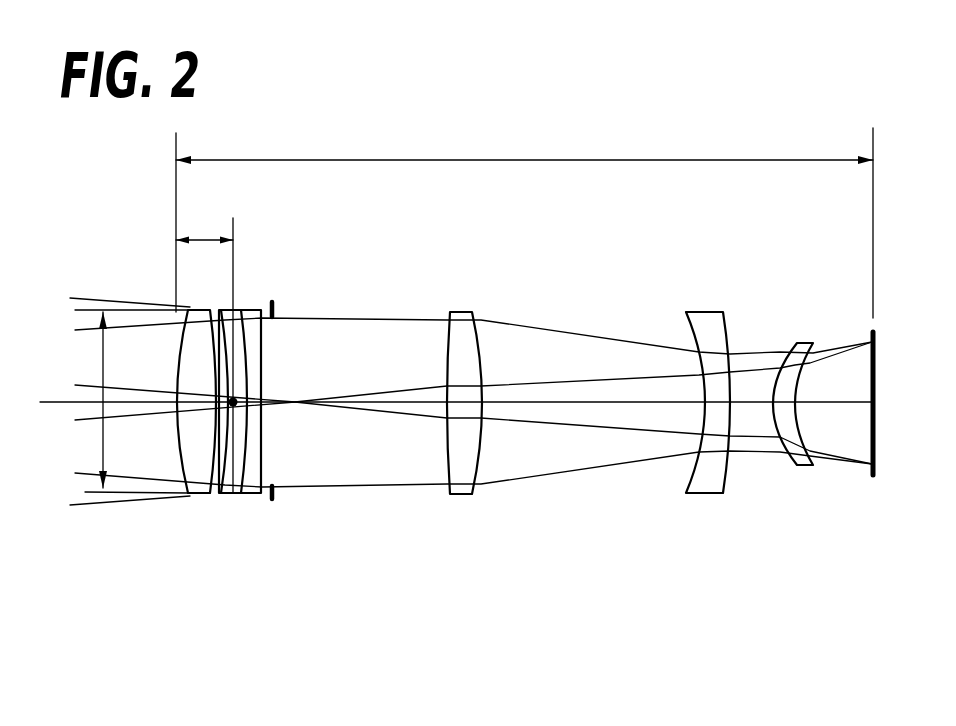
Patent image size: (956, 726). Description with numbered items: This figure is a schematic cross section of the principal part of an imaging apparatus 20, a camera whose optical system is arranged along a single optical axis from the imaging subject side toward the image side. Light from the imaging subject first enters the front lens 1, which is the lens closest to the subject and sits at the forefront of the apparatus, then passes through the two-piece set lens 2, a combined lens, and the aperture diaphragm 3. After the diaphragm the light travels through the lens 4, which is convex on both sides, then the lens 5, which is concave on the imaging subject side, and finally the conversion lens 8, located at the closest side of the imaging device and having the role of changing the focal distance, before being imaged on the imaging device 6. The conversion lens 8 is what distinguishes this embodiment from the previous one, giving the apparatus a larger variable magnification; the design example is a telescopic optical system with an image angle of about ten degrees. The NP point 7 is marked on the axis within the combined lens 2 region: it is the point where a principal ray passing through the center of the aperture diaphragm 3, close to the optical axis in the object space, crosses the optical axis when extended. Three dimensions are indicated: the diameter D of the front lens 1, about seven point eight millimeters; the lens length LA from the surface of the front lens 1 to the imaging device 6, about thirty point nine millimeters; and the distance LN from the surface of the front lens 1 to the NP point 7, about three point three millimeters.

The front lens 1 is at (197, 497).
The two-piece set lens 2 is at (222, 496).
The aperture diaphragm 3 is at (275, 312).
The lens 4 is at (460, 496).
The lens 5 is at (710, 482).
The imaging device 6 is at (871, 446).
The NP point 7 is at (233, 402).
The conversion lens 8 is at (805, 460).
The imaging apparatus 20 is at (536, 618).
The diameter of the front lens D is at (103, 364).
The lens length LA is at (458, 158).
The distance to the NP point LN is at (206, 236).